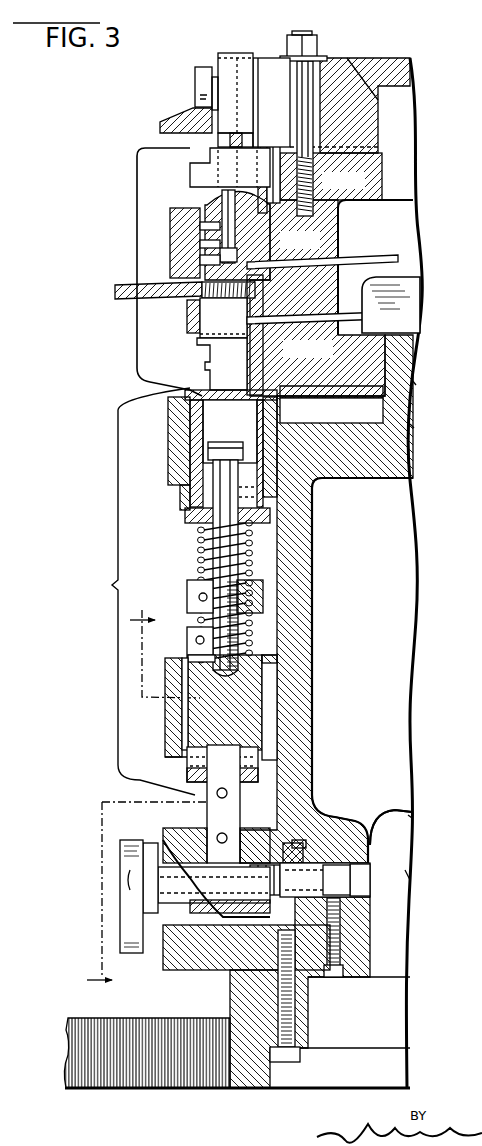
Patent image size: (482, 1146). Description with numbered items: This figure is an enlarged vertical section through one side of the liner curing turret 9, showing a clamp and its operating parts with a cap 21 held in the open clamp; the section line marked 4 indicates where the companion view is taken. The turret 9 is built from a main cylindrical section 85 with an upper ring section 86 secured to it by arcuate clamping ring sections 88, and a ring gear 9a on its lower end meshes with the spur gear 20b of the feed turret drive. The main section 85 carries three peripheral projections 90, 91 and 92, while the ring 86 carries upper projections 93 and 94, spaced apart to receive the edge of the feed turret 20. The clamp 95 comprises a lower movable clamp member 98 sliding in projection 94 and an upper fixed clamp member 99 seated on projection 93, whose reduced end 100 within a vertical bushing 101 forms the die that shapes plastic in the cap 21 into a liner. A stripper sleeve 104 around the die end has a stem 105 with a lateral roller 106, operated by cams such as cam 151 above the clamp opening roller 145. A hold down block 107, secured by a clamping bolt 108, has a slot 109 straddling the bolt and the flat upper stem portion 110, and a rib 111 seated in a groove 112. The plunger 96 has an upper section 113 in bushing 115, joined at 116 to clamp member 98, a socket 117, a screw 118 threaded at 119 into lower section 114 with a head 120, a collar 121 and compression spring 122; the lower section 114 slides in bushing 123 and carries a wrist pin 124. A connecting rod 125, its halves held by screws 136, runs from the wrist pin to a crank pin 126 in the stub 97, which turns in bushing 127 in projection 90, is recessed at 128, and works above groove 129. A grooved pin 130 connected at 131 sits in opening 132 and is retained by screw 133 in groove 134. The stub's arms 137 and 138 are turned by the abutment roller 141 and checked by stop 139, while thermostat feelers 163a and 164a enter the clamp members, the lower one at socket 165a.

The liner curing turret 9 is at (320, 658).
The ring gear 9a is at (233, 1078).
The feed turret 20 is at (125, 297).
The spur gear 20b is at (163, 1075).
The cap 21 is at (232, 335).
The main cylindrical section 85 is at (302, 585).
The upper section or ring 86 is at (323, 242).
The arcuate clamping ring sections 88 is at (421, 285).
The peripheral circumferentially extending projection 90 is at (203, 965).
The second projection 91 is at (170, 753).
The third projection 92 is at (172, 481).
The upper peripheral projection 93 is at (172, 212).
The projection 94 is at (194, 336).
The liner shaping and curing clamp 95 is at (137, 246).
The clamp operating plunger 96 is at (135, 591).
The plunger operating stub 97 is at (247, 847).
The lower movable clamp member 98 is at (210, 355).
The upper fixed clamp member 99 is at (232, 165).
The reduced lower end portion 100 is at (176, 265).
The vertical bushing 101 is at (175, 218).
The stripper sleeve 104 is at (178, 242).
The operating stem 105 is at (212, 192).
The lateral roller 106 is at (195, 82).
The hold down block 107 is at (368, 110).
The clamping bolt 108 is at (307, 36).
The slot 109 is at (266, 65).
The upper portion of stripper stem 110 is at (245, 57).
The rib 111 is at (352, 148).
The groove 112 is at (272, 131).
The upper cylindrical section 113 is at (190, 505).
The lower cylindrical section 114 is at (193, 717).
The bushing 115 is at (191, 431).
The stud and ring connection 116 is at (192, 406).
The upwardly open socket 117 is at (250, 438).
The vertical screw 118 is at (218, 545).
The adjustable threaded connection 119 is at (190, 643).
The head 120 is at (212, 452).
The collar 121 is at (187, 587).
The compression spring 122 is at (199, 567).
The bushing 123 is at (182, 735).
The wrist pin 124 is at (200, 772).
The connecting rod 125 is at (205, 800).
The crank pin 126 is at (195, 878).
The bushing 127 is at (203, 837).
The recess 128 is at (167, 843).
The groove 129 is at (481, 878).
The peripherally grooved pin 130 is at (367, 880).
The connection 131 is at (303, 845).
The opening 132 is at (392, 810).
The screw 133 is at (338, 940).
The groove 134 is at (340, 878).
The screws 136 is at (228, 793).
The lower arm 137 is at (130, 935).
The arm 138 is at (127, 848).
The stop 139 is at (440, 384).
The abutment roller 141 is at (439, 425).
The clamp opening roller 145 is at (438, 812).
The arcuate cam 151 is at (195, 115).
The feeler portion 163a is at (398, 258).
The feeler portion 164a is at (414, 316).
The socket 165a is at (262, 337).
The section line 4 is at (148, 801).